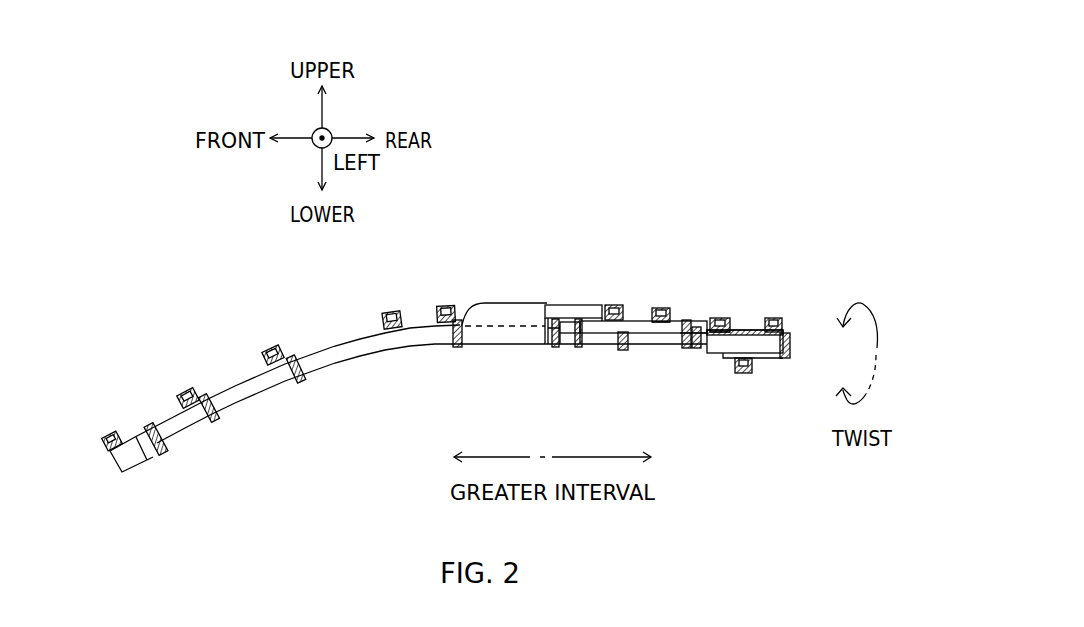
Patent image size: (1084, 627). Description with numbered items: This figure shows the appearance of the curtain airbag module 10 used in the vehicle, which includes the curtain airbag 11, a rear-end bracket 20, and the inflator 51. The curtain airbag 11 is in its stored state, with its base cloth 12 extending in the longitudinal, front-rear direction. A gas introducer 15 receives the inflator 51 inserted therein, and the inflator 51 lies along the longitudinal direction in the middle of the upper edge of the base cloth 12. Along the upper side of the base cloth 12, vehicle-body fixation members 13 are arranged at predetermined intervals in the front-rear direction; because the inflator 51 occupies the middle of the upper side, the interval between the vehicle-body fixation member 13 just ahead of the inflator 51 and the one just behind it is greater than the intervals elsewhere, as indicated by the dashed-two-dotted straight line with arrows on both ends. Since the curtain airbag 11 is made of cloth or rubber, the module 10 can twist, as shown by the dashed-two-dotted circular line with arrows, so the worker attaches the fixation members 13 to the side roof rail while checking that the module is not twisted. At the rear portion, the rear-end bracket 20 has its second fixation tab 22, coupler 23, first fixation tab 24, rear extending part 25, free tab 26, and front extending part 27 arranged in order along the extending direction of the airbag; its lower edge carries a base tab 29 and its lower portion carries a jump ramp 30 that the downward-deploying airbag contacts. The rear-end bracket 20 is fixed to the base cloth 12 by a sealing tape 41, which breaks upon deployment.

The curtain airbag module 10 is at (511, 150).
The curtain airbag 11 is at (363, 313).
The base cloth 12 is at (351, 371).
The vehicle-body fixation member 13 is at (113, 432).
The gas introducer 15 is at (505, 303).
The rear-end bracket 20 is at (749, 315).
The second fixation tab 22 is at (718, 316).
The coupler 23 is at (688, 320).
The first fixation tab 24 is at (661, 308).
The rear extending part 25 is at (628, 340).
The free tab 26 is at (617, 303).
The front extending part 27 is at (582, 344).
The base tab 29 is at (744, 374).
The jump ramp 30 is at (764, 359).
The sealing tape 41 is at (159, 457).
The inflator 51 is at (572, 305).